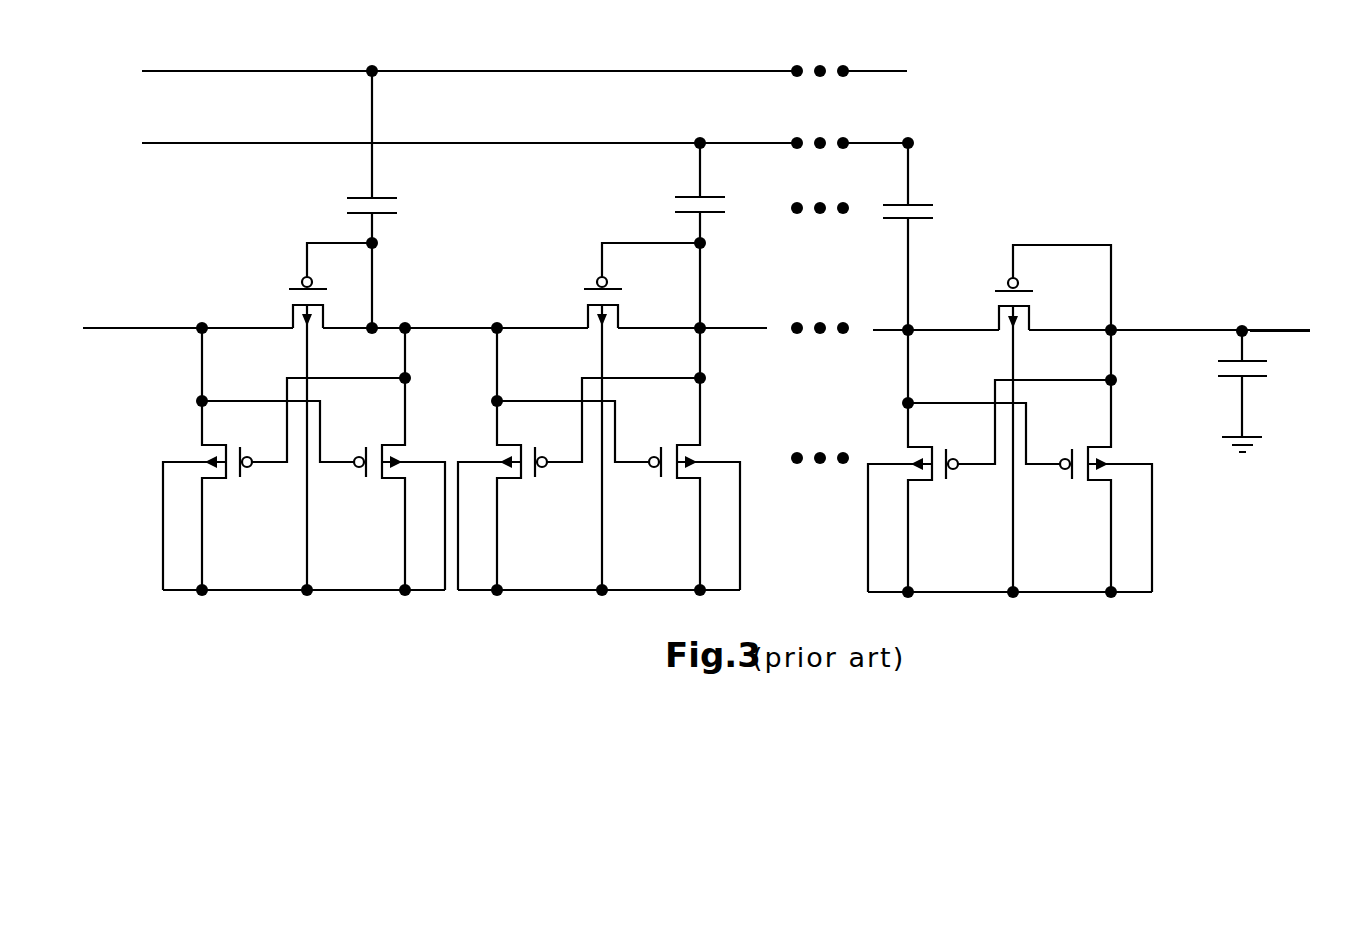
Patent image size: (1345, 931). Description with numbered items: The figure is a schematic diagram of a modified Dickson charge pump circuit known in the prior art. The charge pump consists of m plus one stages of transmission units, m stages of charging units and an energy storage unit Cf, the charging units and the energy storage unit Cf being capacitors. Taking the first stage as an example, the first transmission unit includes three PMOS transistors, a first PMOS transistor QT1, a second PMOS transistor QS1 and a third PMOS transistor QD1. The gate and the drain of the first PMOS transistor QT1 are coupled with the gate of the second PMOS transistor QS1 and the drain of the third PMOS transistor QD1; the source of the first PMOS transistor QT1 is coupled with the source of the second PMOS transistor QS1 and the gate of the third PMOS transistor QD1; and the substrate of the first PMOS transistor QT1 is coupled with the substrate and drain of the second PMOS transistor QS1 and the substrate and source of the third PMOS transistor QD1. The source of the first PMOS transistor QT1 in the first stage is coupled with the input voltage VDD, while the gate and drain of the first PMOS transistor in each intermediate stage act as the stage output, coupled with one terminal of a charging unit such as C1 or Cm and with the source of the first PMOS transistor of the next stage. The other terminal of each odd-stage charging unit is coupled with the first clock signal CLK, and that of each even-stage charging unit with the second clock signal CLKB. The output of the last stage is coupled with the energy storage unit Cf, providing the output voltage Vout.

The first clock signal CLK is at (505, 56).
The second clock signal CLKB is at (504, 124).
The input voltage VDD is at (685, 313).
The charging unit capacitor C1 is at (380, 199).
The charging unit capacitor Cm is at (916, 236).
The energy storage unit Cf is at (1226, 391).
The output voltage Vout is at (1297, 316).
The first PMOS transistor QT1 is at (292, 283).
The second PMOS transistor QS1 is at (261, 473).
The third PMOS transistor QD1 is at (347, 473).